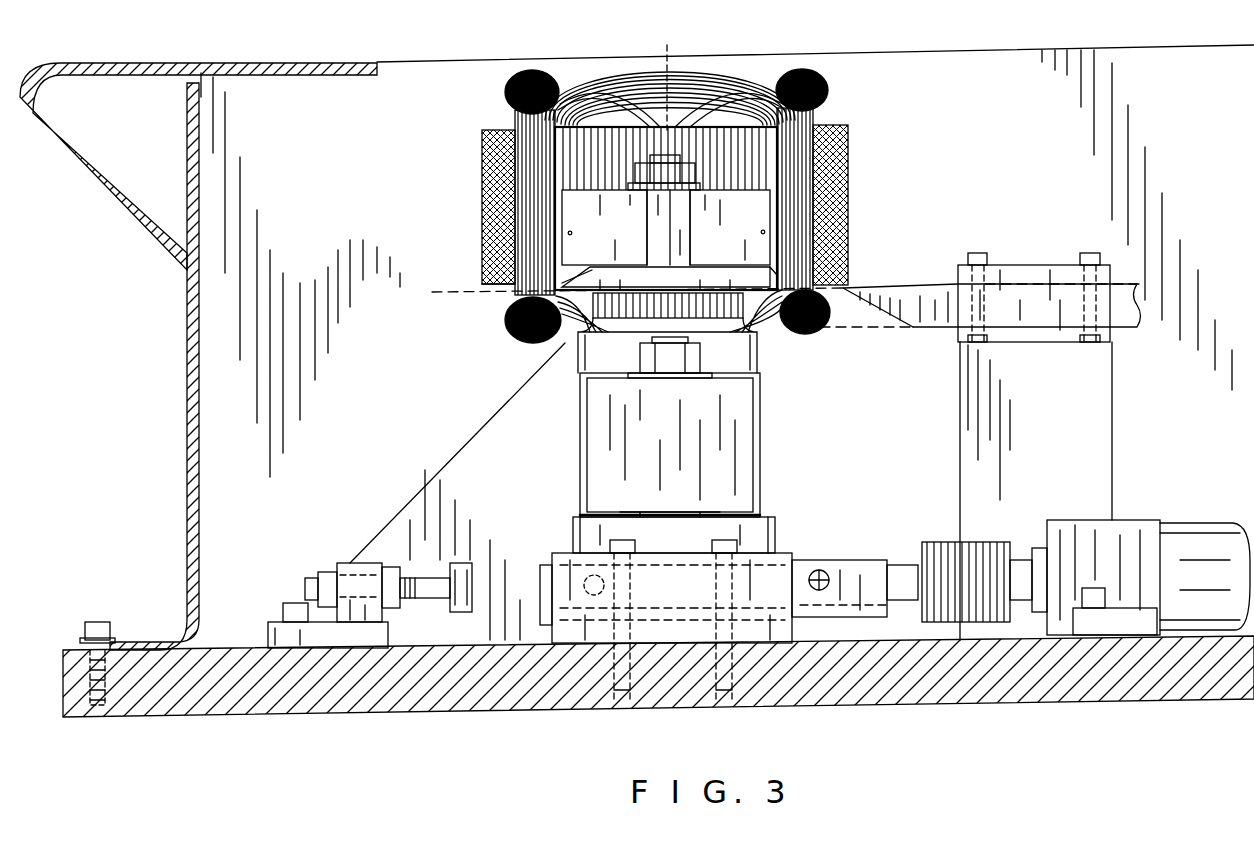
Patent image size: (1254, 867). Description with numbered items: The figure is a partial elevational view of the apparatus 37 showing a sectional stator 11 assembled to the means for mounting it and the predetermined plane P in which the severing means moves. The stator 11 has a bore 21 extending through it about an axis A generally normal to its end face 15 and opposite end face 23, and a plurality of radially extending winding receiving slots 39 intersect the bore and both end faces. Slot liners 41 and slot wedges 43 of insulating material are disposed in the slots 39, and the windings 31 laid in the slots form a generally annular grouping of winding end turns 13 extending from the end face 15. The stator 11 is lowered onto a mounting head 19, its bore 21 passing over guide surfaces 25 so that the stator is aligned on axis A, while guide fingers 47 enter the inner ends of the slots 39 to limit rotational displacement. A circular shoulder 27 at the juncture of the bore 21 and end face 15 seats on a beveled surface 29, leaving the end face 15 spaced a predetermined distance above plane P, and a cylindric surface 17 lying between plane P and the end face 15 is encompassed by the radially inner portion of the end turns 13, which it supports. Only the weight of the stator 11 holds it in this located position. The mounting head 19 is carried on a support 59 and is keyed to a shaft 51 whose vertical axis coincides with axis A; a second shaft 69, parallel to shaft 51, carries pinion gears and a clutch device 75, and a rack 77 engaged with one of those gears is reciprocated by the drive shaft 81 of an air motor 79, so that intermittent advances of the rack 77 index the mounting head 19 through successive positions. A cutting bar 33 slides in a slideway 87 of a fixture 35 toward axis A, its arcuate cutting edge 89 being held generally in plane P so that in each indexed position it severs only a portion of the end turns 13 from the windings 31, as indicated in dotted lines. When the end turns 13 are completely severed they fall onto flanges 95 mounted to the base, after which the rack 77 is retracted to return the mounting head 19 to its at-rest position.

The stator 11 is at (492, 106).
The winding end turns 13 is at (515, 342).
The end face 15 is at (488, 290).
The cylindric surface 17 is at (566, 290).
The mounting head 19 is at (718, 186).
The bore 21 is at (573, 176).
The opposite end face 23 is at (490, 132).
The guide surfaces 25 is at (765, 229).
The circular shoulder 27 is at (563, 280).
The beveled surface 29 is at (766, 268).
The windings 31 is at (848, 226).
The cutting bar 33 is at (936, 335).
The fixture 35 is at (1107, 395).
The apparatus 37 is at (996, 182).
The winding receiving slots 39 is at (492, 208).
The slot liners 41 is at (825, 130).
The slot wedges 43 is at (553, 139).
The guide fingers 47 is at (662, 231).
The shaft 51 is at (657, 160).
The support 59 is at (755, 352).
The shaft 69 is at (652, 352).
The clutch device 75 is at (750, 462).
The rack 77 is at (838, 565).
The air motor 79 is at (1195, 530).
The drive shaft 81 is at (1020, 565).
The slideway 87 is at (1043, 330).
The arcuate cutting edge 89 is at (845, 285).
The flanges 95 is at (378, 540).
The axis A is at (696, 30).
The predetermined plane P is at (775, 292).